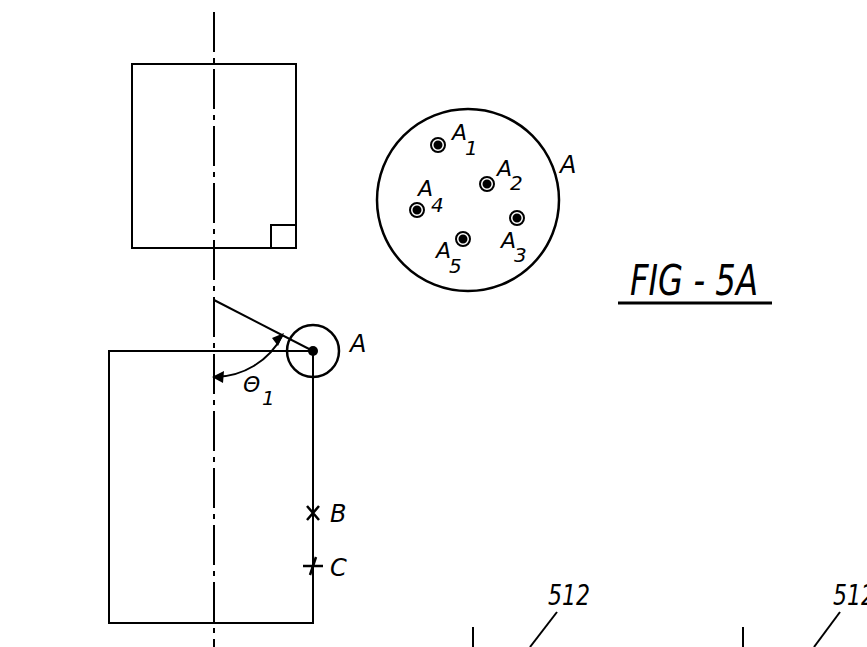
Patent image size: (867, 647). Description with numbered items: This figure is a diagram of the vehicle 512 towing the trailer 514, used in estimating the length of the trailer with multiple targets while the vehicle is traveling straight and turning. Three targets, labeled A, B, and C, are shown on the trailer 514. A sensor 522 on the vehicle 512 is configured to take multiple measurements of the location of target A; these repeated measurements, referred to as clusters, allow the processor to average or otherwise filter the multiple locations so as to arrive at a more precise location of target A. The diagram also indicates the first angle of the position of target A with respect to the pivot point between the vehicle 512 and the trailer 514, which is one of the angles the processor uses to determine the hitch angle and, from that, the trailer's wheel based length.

The vehicle 512 is at (270, 117).
The trailer 514 is at (135, 423).
The sensor 522 is at (283, 235).